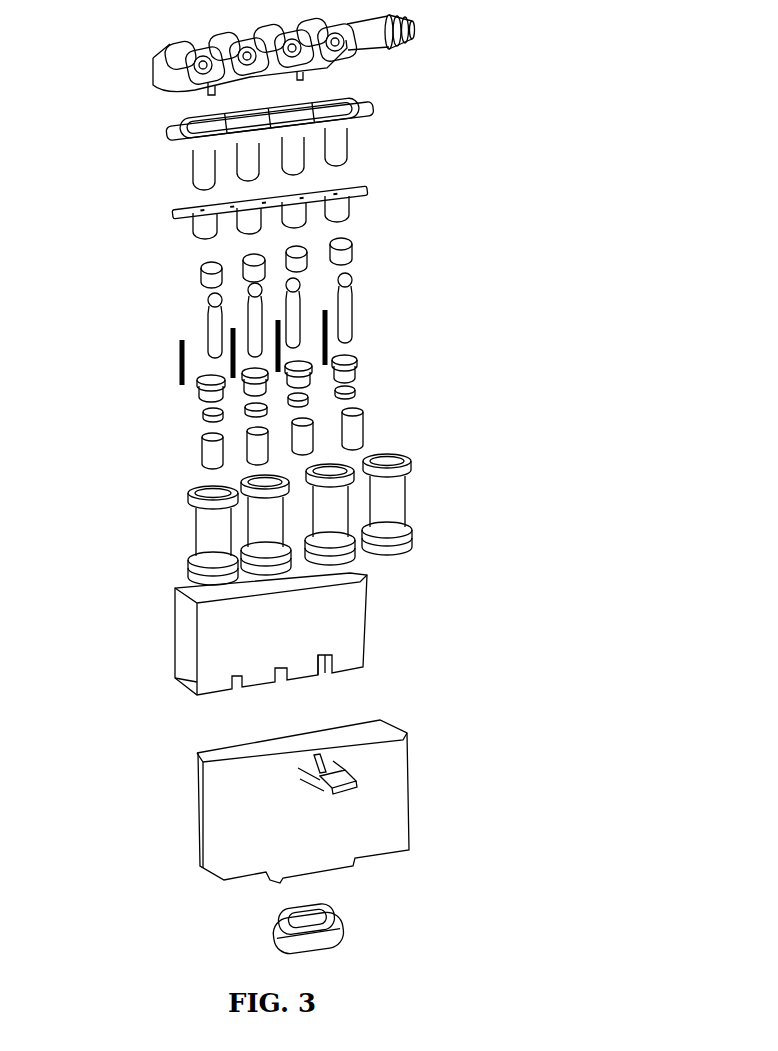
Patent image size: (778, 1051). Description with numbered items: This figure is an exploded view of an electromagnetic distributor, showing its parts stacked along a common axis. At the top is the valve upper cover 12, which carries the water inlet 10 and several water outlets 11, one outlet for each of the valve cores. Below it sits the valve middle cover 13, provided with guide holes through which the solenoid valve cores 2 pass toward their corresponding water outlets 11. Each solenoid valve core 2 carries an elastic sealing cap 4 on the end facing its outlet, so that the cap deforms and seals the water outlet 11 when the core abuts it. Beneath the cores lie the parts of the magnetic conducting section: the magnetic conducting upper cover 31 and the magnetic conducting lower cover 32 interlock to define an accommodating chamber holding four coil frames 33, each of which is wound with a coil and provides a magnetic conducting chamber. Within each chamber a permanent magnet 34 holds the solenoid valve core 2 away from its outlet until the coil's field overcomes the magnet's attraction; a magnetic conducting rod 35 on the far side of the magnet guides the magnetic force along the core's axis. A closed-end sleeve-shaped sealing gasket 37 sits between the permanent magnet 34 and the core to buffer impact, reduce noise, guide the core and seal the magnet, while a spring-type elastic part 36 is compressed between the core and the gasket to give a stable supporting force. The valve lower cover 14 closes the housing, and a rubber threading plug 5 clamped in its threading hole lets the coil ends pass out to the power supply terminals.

The water inlet 10 is at (414, 31).
The water outlet 11 is at (347, 46).
The valve upper cover 12 is at (166, 60).
The valve middle cover 13 is at (373, 122).
The magnetic conducting upper cover 31 is at (368, 195).
The sealing cap 4 is at (206, 283).
The solenoid valve core 2 is at (354, 300).
The elastic part 36 is at (181, 366).
The sealing gasket 37 is at (349, 378).
The permanent magnet 34 is at (201, 420).
The magnetic conducting rod 35 is at (366, 420).
The coil frame 33 is at (195, 530).
The magnetic conducting lower cover 32 is at (366, 658).
The valve lower cover 14 is at (201, 797).
The threading plug 5 is at (346, 928).